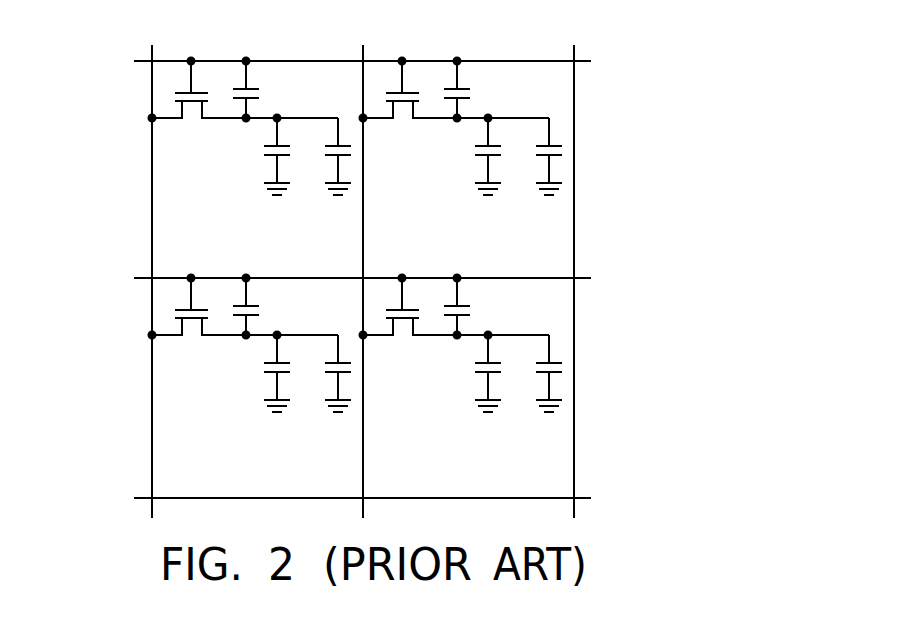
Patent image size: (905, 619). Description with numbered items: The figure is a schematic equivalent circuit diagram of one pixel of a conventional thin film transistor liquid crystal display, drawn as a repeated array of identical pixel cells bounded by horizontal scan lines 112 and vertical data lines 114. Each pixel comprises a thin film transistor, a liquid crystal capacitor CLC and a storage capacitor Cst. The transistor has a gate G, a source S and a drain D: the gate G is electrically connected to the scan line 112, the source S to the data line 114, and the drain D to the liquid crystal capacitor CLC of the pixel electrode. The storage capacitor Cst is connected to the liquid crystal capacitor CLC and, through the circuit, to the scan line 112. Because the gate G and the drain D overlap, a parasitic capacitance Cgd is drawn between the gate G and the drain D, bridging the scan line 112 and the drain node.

The scan line 112 is at (299, 60).
The data line 114 is at (151, 199).
The gate G is at (190, 80).
The source S is at (166, 125).
The drain D is at (267, 125).
The parasitic capacitance Cgd is at (265, 88).
The liquid crystal capacitor CLC is at (260, 156).
The storage capacitor Cst is at (323, 156).